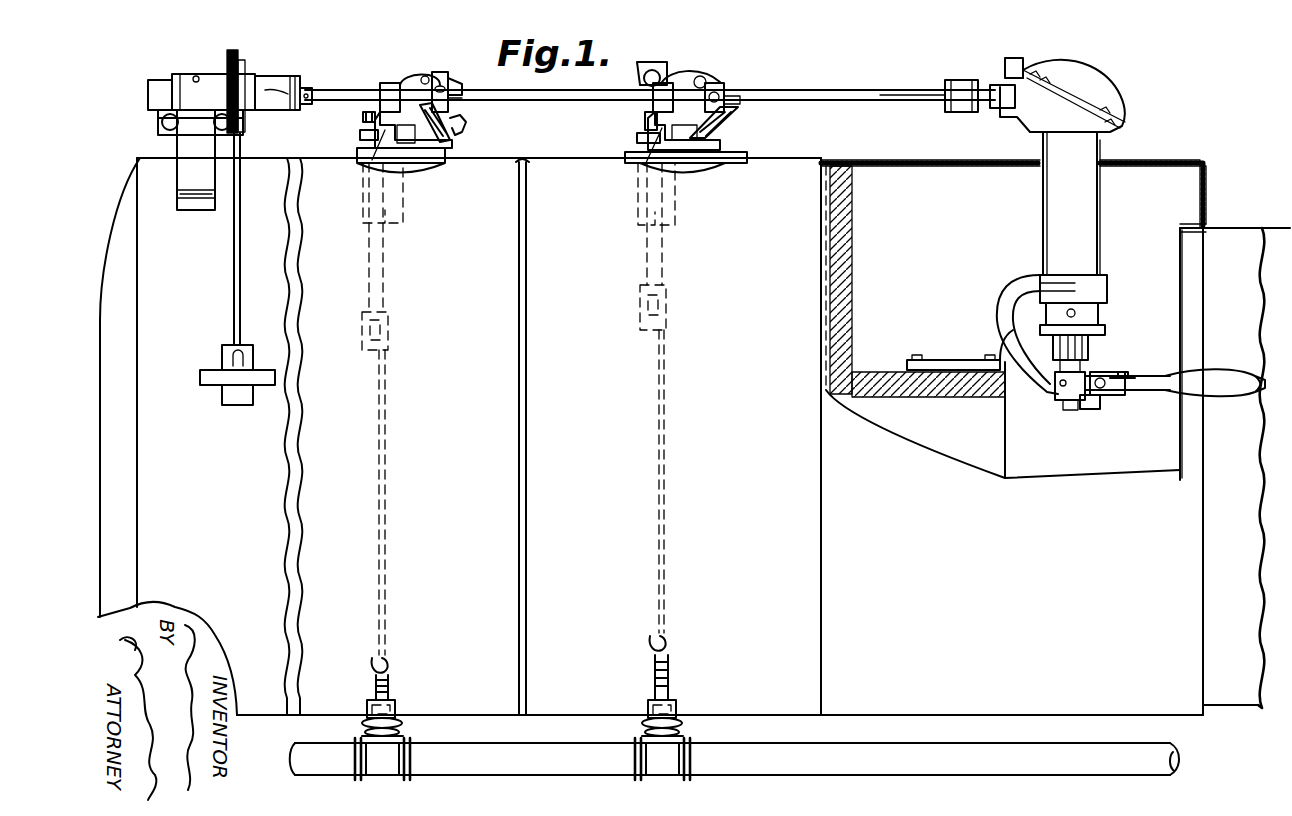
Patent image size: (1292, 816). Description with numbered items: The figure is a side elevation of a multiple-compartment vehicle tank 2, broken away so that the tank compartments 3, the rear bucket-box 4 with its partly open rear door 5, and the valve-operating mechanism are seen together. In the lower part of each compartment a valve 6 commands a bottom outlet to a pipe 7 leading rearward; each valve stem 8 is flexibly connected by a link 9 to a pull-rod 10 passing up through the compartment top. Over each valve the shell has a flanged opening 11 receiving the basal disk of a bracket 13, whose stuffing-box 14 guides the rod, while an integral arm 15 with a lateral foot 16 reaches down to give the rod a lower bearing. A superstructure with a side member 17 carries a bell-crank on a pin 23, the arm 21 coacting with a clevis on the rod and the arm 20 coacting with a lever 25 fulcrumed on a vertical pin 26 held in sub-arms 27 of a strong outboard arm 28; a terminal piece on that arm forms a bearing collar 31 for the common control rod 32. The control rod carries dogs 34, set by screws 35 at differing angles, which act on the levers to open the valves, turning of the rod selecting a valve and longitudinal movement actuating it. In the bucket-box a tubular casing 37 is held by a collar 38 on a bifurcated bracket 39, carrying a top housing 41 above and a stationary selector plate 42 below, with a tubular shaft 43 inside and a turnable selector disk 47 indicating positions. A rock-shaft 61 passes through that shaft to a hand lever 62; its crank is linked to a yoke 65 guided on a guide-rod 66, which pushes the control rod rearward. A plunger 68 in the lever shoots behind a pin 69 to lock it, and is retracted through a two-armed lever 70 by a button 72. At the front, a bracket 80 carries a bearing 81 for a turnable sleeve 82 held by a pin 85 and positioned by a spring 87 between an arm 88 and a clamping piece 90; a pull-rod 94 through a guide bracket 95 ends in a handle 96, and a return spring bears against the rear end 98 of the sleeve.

The tank 2 is at (553, 162).
The tank compartments 3 is at (761, 436).
The bucket-box 4 is at (956, 162).
The rear door 5 is at (1229, 246).
The valves 6 is at (397, 700).
The pipe 7 is at (826, 776).
The valve stems 8 is at (372, 665).
The links 9 is at (388, 459).
The pull-rods 10 is at (388, 276).
The flanged opening 11 is at (360, 161).
The bracket 13 is at (364, 116).
The stuffing-box 14 is at (360, 135).
The arm 15 is at (403, 188).
The lateral foot 16 is at (363, 219).
The side member 17 is at (409, 82).
The arm 20 is at (467, 120).
The arm 21 is at (668, 78).
The pin 23 is at (441, 80).
The lever 25 is at (448, 140).
The vertical pin 26 is at (743, 162).
The sub-arms 27 is at (455, 150).
The outboard-extending arm 28 is at (372, 160).
The bearing collars 31 is at (380, 95).
The control rod 32 is at (845, 91).
The dogs 34 is at (467, 82).
The screws 35 is at (452, 98).
The tubular casing 37 is at (1098, 212).
The collar 38 is at (1108, 289).
The bifurcated bracket 39 is at (1005, 284).
The top housing 41 is at (1106, 94).
The selector plate 42 is at (1106, 331).
The tubular shaft 43 is at (1090, 360).
The selector disk 47 is at (1005, 331).
The rock-shaft 61 is at (1050, 400).
The hand lever 62 is at (1168, 393).
The yoke 65 is at (958, 82).
The guide-rod 66 is at (920, 96).
The plunger 68 is at (1100, 398).
The pin 69 is at (1072, 411).
The two-armed lever 70 is at (1120, 386).
The button 72 is at (1255, 396).
The bracket 80 is at (180, 171).
The bearing 81 is at (198, 78).
The sleeve 82 is at (260, 86).
The pin 85 is at (199, 77).
The spring 87 is at (285, 95).
The arm 88 is at (242, 60).
The clamping piece 90 is at (166, 134).
The pull-rod 94 is at (234, 268).
The guide bracket 95 is at (222, 353).
The handle 96 is at (210, 385).
The rear end 98 is at (308, 94).